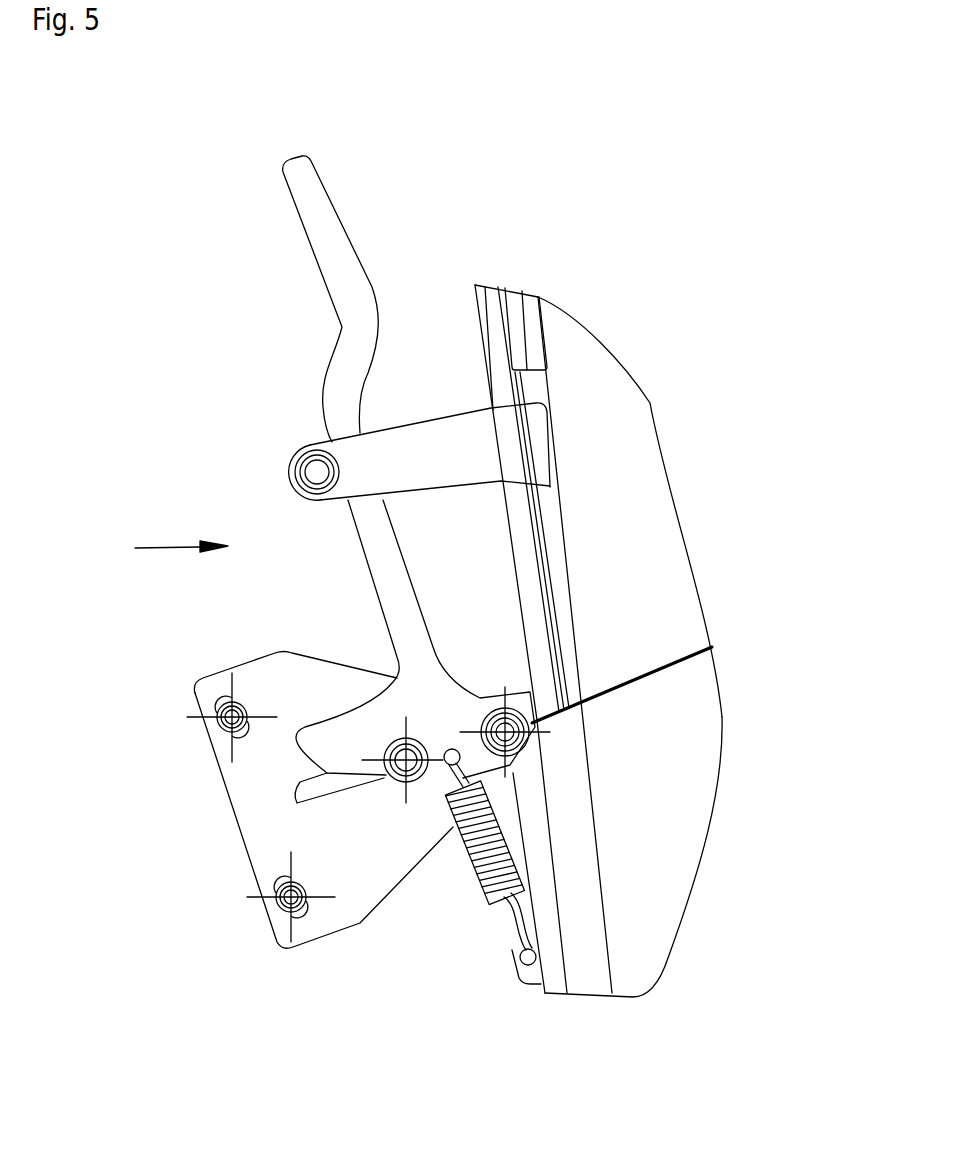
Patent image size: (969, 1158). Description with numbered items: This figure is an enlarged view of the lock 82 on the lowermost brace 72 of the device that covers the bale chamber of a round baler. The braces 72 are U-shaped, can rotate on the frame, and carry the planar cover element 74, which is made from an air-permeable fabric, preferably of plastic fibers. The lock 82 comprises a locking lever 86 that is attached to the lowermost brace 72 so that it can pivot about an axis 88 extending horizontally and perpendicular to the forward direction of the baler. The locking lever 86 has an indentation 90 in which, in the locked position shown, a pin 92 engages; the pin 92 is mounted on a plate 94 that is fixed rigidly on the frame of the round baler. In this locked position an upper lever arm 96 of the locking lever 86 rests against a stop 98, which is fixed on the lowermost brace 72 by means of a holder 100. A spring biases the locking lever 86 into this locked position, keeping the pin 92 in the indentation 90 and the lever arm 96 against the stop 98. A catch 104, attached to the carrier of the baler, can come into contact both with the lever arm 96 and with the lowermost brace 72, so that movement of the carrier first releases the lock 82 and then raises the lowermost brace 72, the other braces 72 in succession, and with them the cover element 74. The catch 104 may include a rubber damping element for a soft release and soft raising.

The brace 72 is at (567, 617).
The cover element 74 is at (637, 795).
The lock 82 is at (169, 549).
The locking lever 86 is at (413, 642).
The axis 88 is at (492, 697).
The indentation 90 is at (395, 748).
The pin 92 is at (407, 805).
The plate 94 is at (315, 929).
The lever arm 96 is at (360, 337).
The stop 98 is at (317, 472).
The holder 100 is at (428, 443).
The catch 104 is at (490, 910).